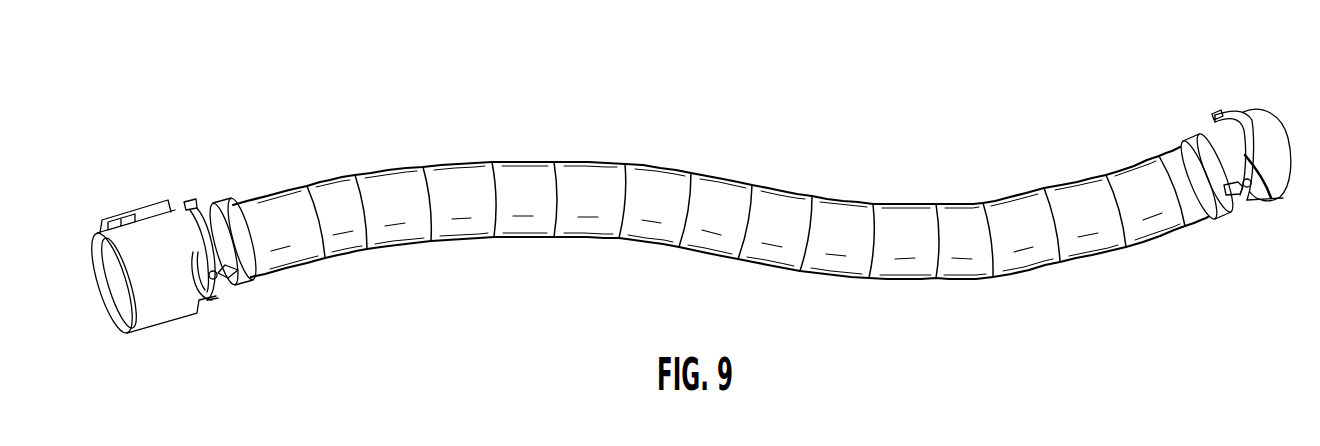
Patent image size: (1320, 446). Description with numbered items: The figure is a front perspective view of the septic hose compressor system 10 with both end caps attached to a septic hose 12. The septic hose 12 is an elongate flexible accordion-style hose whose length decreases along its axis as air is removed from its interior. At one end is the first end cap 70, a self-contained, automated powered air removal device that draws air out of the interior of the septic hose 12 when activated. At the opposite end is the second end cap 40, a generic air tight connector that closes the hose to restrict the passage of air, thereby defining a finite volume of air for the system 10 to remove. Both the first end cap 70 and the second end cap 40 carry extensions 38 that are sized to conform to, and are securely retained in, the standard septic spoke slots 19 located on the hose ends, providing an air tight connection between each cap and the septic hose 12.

The septic hose compressor system 10 is at (350, 123).
The septic hose 12 is at (503, 160).
The septic spoke slots 19 is at (202, 210).
The extensions 38 is at (222, 274).
The second end cap 40 is at (1261, 130).
The first end cap 70 is at (169, 293).